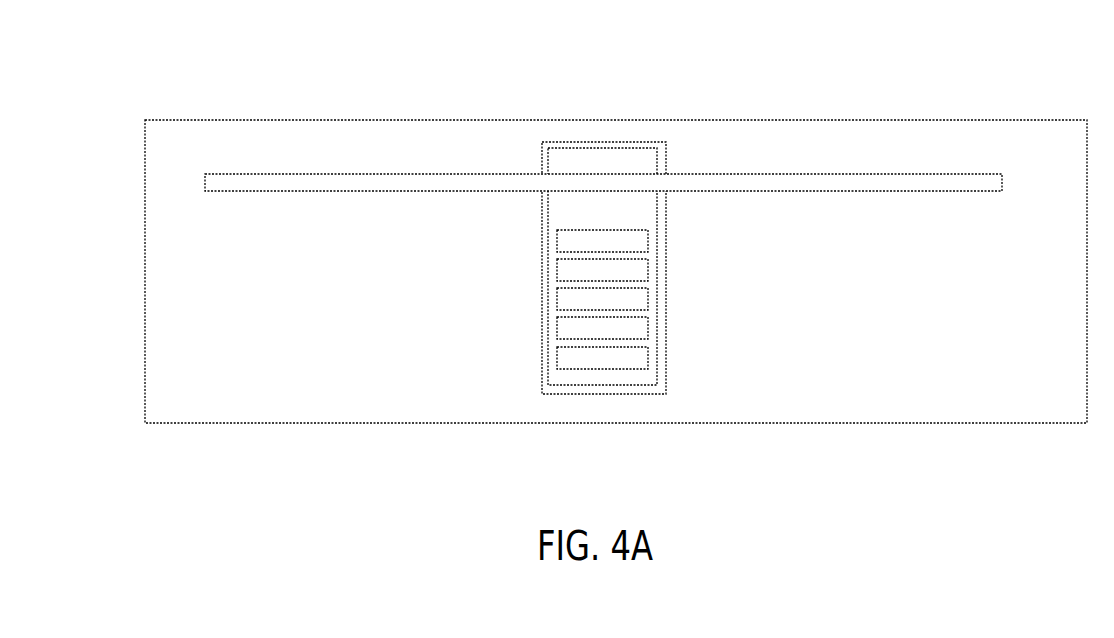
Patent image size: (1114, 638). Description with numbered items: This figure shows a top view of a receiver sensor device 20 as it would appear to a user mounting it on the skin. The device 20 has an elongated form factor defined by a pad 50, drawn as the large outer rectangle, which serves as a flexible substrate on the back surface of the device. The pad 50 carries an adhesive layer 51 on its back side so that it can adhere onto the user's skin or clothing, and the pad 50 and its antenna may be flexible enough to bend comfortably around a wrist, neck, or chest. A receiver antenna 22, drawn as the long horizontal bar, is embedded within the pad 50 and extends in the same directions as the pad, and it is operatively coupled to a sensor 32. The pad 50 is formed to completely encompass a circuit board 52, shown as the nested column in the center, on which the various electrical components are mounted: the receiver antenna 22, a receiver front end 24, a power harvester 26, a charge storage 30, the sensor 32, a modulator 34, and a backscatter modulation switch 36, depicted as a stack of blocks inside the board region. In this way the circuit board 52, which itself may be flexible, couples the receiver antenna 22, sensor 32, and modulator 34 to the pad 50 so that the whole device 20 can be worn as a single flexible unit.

The receiver sensor device 20 is at (946, 88).
The receiver antenna 22 is at (405, 175).
The receiver front end 24 is at (612, 250).
The power harvester 26 is at (612, 280).
The charge storage 30 is at (612, 308).
The sensor 32 is at (619, 311).
The modulator 34 is at (612, 338).
The backscatter modulation switch 36 is at (612, 368).
The pad 50 is at (483, 422).
The adhesive layer 51 is at (540, 373).
The circuit board 52 is at (588, 383).